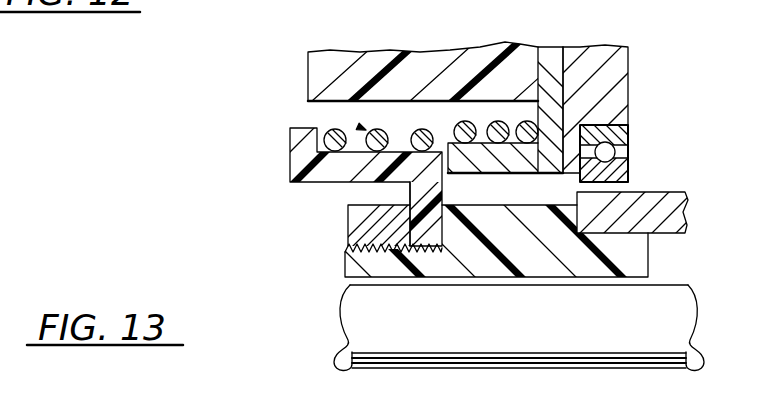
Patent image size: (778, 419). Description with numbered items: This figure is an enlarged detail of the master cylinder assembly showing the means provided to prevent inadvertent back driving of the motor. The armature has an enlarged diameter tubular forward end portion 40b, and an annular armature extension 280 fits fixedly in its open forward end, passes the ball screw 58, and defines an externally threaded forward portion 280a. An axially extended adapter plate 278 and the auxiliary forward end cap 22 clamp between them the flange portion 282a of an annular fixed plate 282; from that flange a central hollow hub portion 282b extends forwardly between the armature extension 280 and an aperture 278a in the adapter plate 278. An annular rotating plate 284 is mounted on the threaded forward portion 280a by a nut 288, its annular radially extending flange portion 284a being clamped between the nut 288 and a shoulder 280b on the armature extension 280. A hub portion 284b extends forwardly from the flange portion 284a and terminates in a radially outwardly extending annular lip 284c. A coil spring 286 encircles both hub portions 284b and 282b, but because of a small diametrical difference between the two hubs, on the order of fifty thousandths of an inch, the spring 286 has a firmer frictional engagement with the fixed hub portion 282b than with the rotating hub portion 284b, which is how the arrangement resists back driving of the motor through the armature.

The auxiliary forward end cap 22 is at (623, 62).
The enlarged diameter tubular forward end portion 40b is at (657, 192).
The ball screw 58 is at (442, 355).
The adapter plate 278 is at (442, 54).
The aperture 278a is at (394, 108).
The armature extension 280 is at (459, 266).
The externally threaded forward portion 280a is at (343, 258).
The shoulder 280b is at (418, 207).
The fixed plate 282 is at (636, 89).
The flange portion 282a is at (565, 83).
The central hollow hub portion 282b is at (492, 172).
The rotating plate 284 is at (372, 187).
The flange portion 284a is at (435, 232).
The hub portion 284b is at (399, 148).
The annular lip 284c is at (290, 163).
The coil spring 286 is at (358, 127).
The nut 288 is at (347, 228).